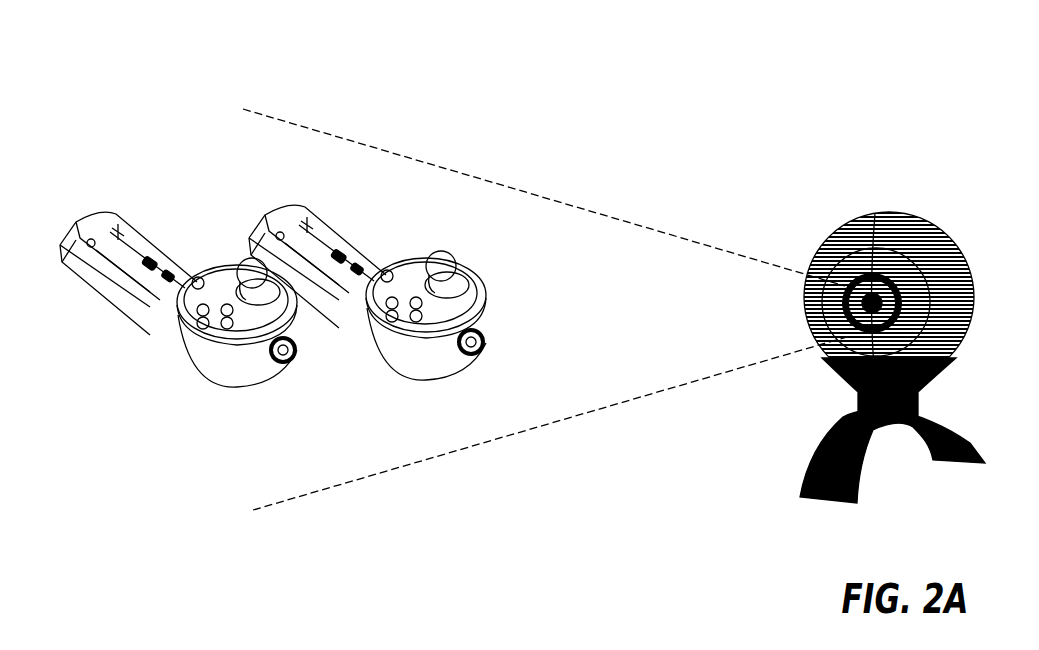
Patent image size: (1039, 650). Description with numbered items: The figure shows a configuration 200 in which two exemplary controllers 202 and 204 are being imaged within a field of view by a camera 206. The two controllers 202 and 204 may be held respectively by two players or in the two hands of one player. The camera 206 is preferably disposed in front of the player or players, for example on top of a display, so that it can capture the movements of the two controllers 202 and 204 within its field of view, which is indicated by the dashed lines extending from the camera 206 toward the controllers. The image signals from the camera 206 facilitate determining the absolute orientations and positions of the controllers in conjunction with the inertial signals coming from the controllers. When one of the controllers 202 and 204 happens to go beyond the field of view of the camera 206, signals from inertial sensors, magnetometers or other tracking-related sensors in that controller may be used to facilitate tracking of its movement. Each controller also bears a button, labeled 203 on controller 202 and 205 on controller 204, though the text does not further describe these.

The configuration 200 is at (537, 256).
The controller 202 is at (366, 284).
The button on first controller 203 is at (484, 338).
The controller 204 is at (172, 293).
The button on second controller 205 is at (290, 362).
The camera 206 is at (962, 248).